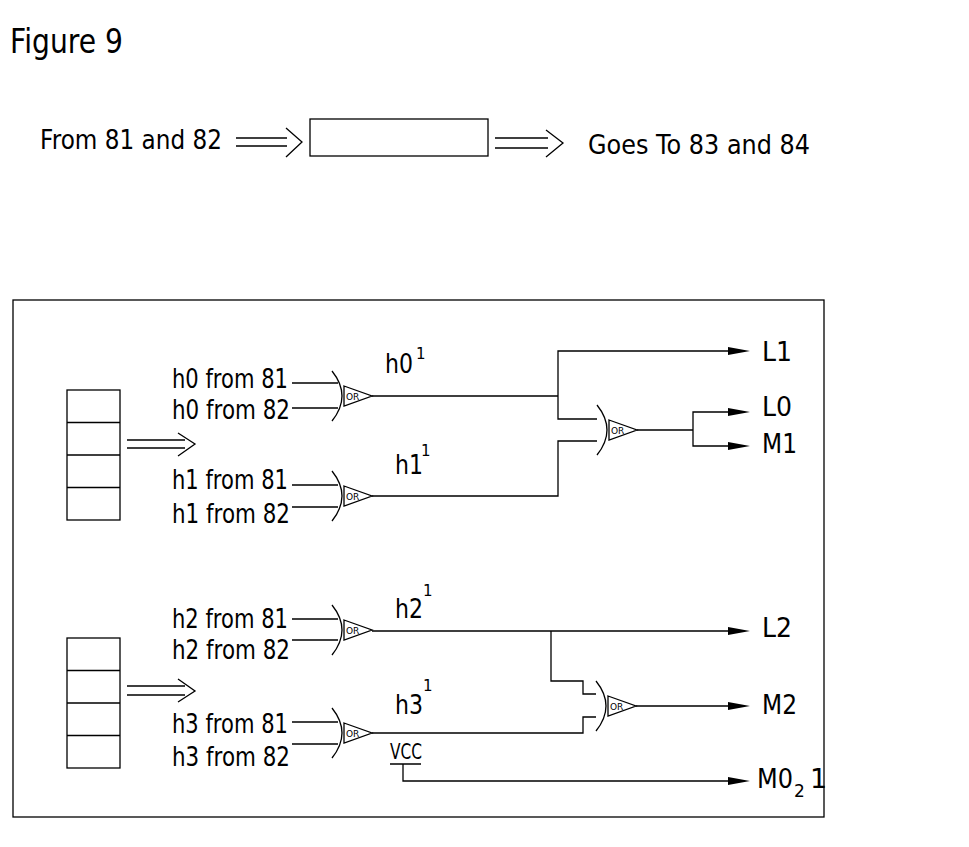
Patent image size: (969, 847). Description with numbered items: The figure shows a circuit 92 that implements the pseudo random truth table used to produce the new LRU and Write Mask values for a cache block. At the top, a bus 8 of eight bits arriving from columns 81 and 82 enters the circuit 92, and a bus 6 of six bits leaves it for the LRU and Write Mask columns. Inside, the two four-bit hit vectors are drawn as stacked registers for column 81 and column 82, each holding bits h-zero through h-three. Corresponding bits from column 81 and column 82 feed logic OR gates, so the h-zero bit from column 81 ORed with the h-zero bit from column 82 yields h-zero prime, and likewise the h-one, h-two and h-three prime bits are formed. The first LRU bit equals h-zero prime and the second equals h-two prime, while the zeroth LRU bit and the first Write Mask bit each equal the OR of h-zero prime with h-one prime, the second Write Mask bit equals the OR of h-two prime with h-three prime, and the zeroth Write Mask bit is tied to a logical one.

The circuit 92 is at (376, 123).
The 8-bit input bus from registers 81 and 82 8 is at (243, 142).
The 6-bit output bus to 83 and 84 6 is at (531, 148).
The column 81 is at (117, 390).
The column 82 is at (107, 638).